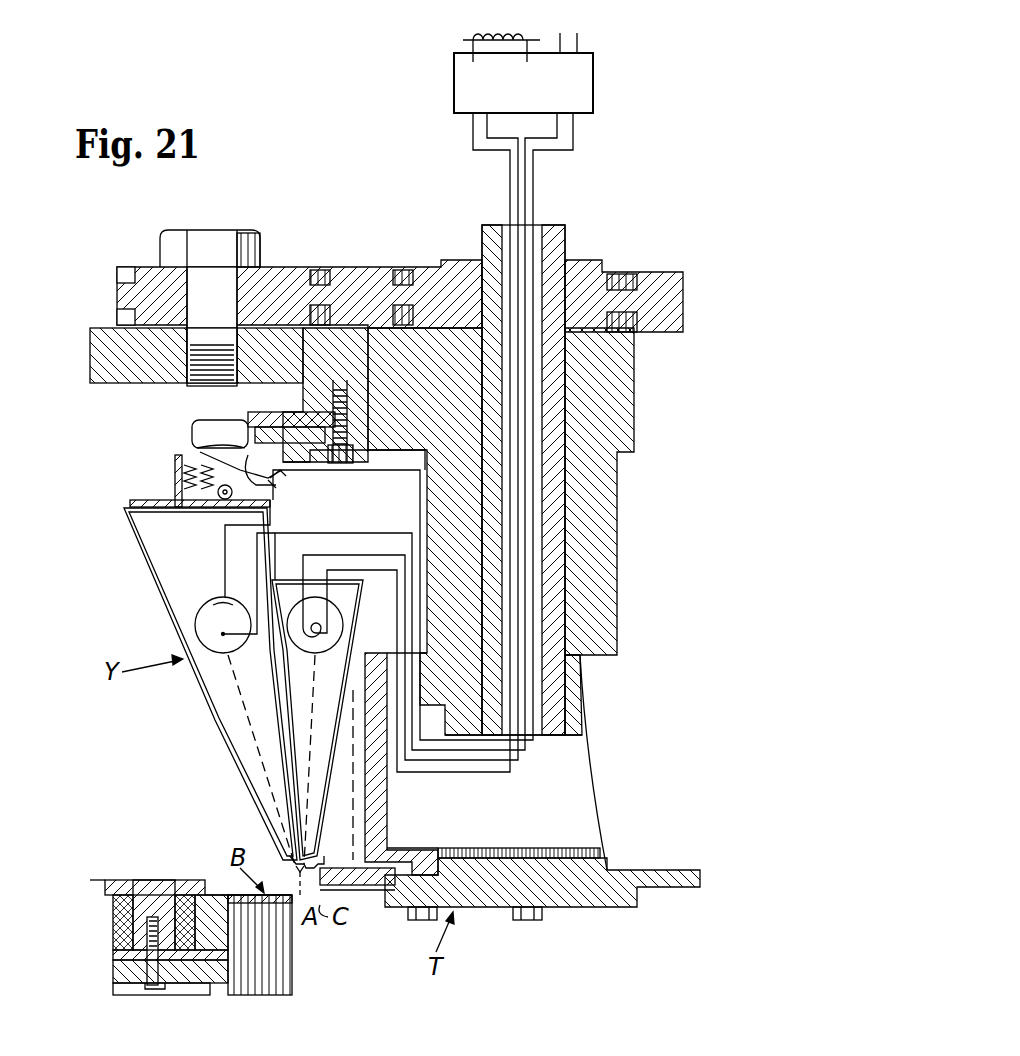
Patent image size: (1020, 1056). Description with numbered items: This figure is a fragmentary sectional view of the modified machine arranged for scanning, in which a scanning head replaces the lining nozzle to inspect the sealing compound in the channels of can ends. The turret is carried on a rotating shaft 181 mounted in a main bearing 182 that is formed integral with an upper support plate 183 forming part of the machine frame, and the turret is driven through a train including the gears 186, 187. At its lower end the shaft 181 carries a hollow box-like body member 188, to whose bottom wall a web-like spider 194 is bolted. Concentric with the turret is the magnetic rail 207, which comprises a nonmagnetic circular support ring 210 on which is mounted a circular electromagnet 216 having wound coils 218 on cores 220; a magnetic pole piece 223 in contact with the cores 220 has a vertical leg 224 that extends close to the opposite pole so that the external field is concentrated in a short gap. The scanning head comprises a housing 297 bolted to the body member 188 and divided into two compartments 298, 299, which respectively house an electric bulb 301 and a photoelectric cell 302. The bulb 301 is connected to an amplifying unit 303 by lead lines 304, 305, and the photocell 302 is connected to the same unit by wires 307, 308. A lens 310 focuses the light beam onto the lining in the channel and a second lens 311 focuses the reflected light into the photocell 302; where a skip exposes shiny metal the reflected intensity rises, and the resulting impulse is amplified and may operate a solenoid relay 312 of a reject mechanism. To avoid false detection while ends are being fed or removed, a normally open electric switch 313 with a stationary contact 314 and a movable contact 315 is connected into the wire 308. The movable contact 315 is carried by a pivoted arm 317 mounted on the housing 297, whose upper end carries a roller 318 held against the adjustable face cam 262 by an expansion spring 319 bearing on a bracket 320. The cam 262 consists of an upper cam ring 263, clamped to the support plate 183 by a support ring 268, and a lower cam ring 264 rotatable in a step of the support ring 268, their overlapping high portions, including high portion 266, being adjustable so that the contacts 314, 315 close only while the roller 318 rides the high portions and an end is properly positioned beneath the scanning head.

The solenoid relay 312 is at (478, 36).
The amplifying unit 303 is at (596, 83).
The lead line 304 is at (560, 128).
The lead line 305 is at (575, 148).
The gear 186 is at (298, 292).
The gear 187 is at (405, 295).
The upper support plate 183 is at (100, 350).
The main bearing 182 is at (608, 370).
The rotating shaft 181 is at (552, 420).
The roller 318 is at (195, 430).
The pivoted arm 317 is at (225, 470).
The high portion 266 is at (252, 412).
The adjustable face cam 262 is at (290, 432).
The upper cam ring 263 is at (290, 411).
The lower cam ring 264 is at (285, 450).
The support ring 268 is at (355, 462).
The wire 308 is at (360, 474).
The wire 307 is at (372, 532).
The bracket 320 is at (175, 477).
The expansion spring 319 is at (210, 495).
The stationary contact 314 is at (282, 478).
The movable contact 315 is at (278, 486).
The electric switch 313 is at (272, 490).
The housing 297 is at (157, 582).
The photoelectric cell 302 is at (232, 652).
The electric bulb 301 is at (343, 627).
The compartment 299 is at (252, 764).
The compartment 298 is at (318, 835).
The lens 310 is at (316, 860).
The second lens 311 is at (281, 880).
The body member 188 is at (378, 812).
The spider 194 is at (500, 895).
The magnetic rail 207 is at (194, 902).
The circular electromagnet 216 is at (150, 880).
The wound coils 218 is at (113, 912).
The cores 220 is at (145, 930).
The magnetic pole piece 223 is at (113, 958).
The circular support ring 210 is at (120, 974).
The vertical leg 224 is at (232, 942).